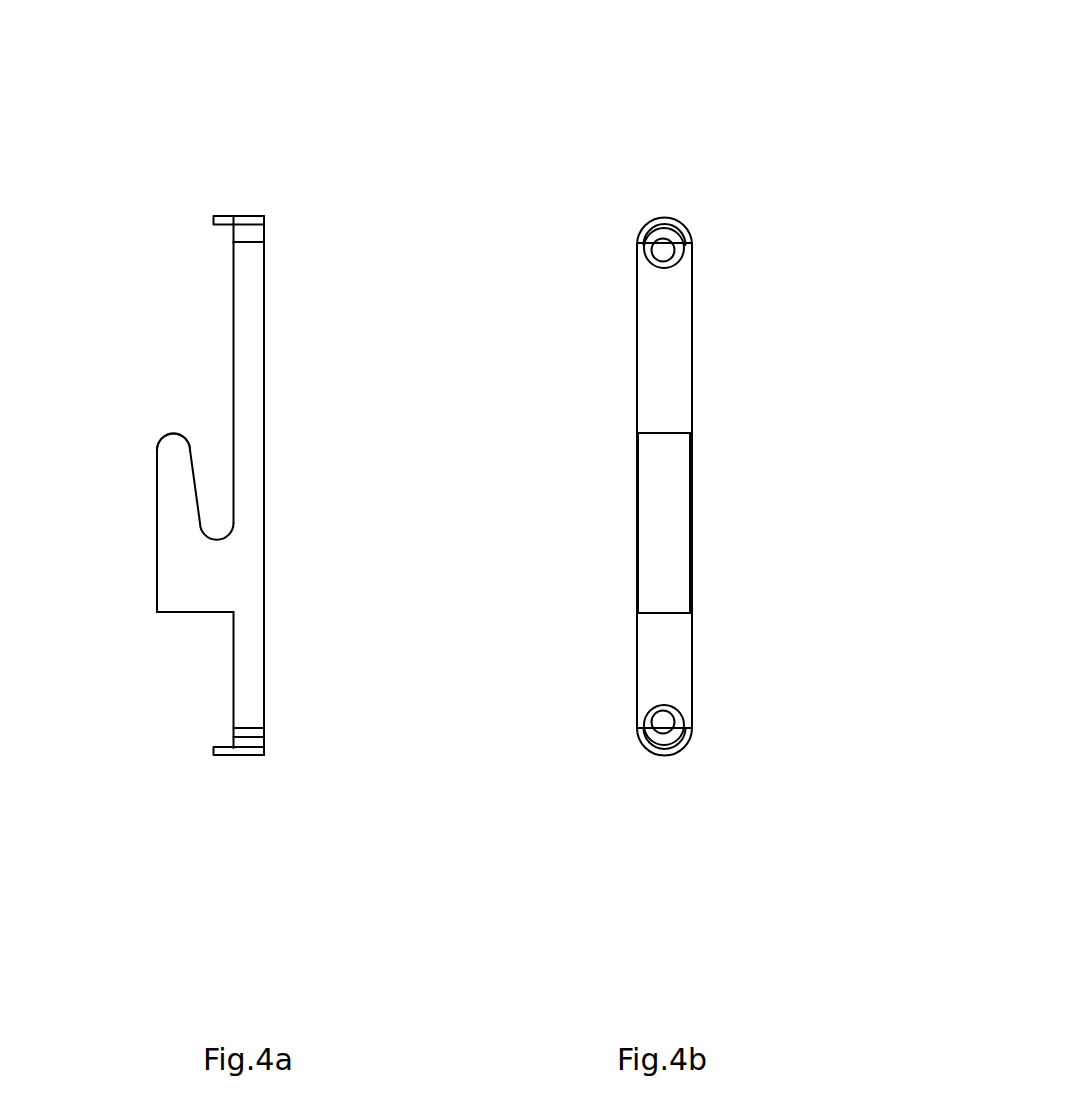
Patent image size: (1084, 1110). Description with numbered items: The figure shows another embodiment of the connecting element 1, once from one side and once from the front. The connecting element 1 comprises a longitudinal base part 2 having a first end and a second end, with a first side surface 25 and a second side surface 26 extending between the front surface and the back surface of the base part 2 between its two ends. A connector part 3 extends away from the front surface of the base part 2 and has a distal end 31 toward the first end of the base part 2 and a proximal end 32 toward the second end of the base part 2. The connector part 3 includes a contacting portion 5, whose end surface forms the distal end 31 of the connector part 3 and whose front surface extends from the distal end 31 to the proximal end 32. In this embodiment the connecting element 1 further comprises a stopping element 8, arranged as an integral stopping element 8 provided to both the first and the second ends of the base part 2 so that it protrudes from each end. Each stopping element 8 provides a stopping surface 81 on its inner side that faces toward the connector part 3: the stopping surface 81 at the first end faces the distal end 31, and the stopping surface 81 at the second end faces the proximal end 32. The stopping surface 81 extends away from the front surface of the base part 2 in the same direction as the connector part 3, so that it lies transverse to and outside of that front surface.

In FIG. 4A, the connecting element 1 is at (273, 186).
In FIG. 4B, the connecting element 1 is at (693, 205).
In FIG. 4A, the base part 2 is at (249, 436).
In FIG. 4B, the base part 2 is at (673, 307).
In FIG. 4A, the connector part 3 is at (197, 562).
In FIG. 4B, the connector part 3 is at (725, 520).
In FIG. 4A, the contacting portion 5 is at (167, 462).
In FIG. 4A, the stopping element 8 is at (229, 216).
In FIG. 4B, the stopping element 8 is at (665, 236).
In FIG. 4B, the first side surface 25 is at (638, 347).
In FIG. 4A, the second side surface 26 is at (242, 358).
In FIG. 4B, the second side surface 26 is at (693, 377).
In FIG. 4A, the distal end 31 is at (173, 434).
In FIG. 4B, the distal end 31 is at (670, 425).
In FIG. 4A, the proximal end 32 is at (205, 618).
In FIG. 4B, the proximal end 32 is at (665, 613).
In FIG. 4A, the stopping surface 81 is at (225, 235).
In FIG. 4B, the stopping surface 81 is at (693, 273).